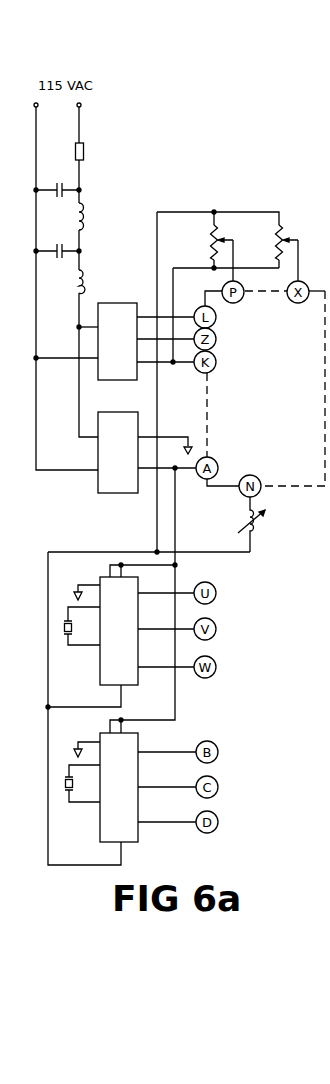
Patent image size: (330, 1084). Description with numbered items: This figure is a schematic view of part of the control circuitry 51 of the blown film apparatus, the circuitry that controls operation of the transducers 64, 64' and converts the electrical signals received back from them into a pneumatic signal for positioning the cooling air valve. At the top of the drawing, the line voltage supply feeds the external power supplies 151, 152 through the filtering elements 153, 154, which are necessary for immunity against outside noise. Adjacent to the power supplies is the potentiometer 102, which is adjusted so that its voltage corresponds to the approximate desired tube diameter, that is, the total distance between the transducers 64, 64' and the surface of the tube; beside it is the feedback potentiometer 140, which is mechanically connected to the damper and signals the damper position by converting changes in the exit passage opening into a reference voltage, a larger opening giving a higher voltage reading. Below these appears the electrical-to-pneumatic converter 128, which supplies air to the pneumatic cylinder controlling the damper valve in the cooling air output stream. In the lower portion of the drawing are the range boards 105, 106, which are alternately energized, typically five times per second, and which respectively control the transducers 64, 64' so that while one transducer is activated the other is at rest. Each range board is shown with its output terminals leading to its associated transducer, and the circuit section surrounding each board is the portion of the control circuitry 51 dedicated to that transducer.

The filtering element 153 is at (102, 140).
The filtering element 154 is at (80, 187).
The external power supply 151 is at (115, 303).
The external power supply 152 is at (135, 405).
The feedback potentiometer 140 is at (229, 228).
The potentiometer 102 is at (292, 230).
The control circuitry 51 is at (310, 490).
The electrical-to-pneumatic converter 128 is at (245, 520).
The range board 105 is at (100, 666).
The range board 106 is at (100, 822).
The transducer 64 is at (68, 630).
The transducer 64' is at (68, 786).